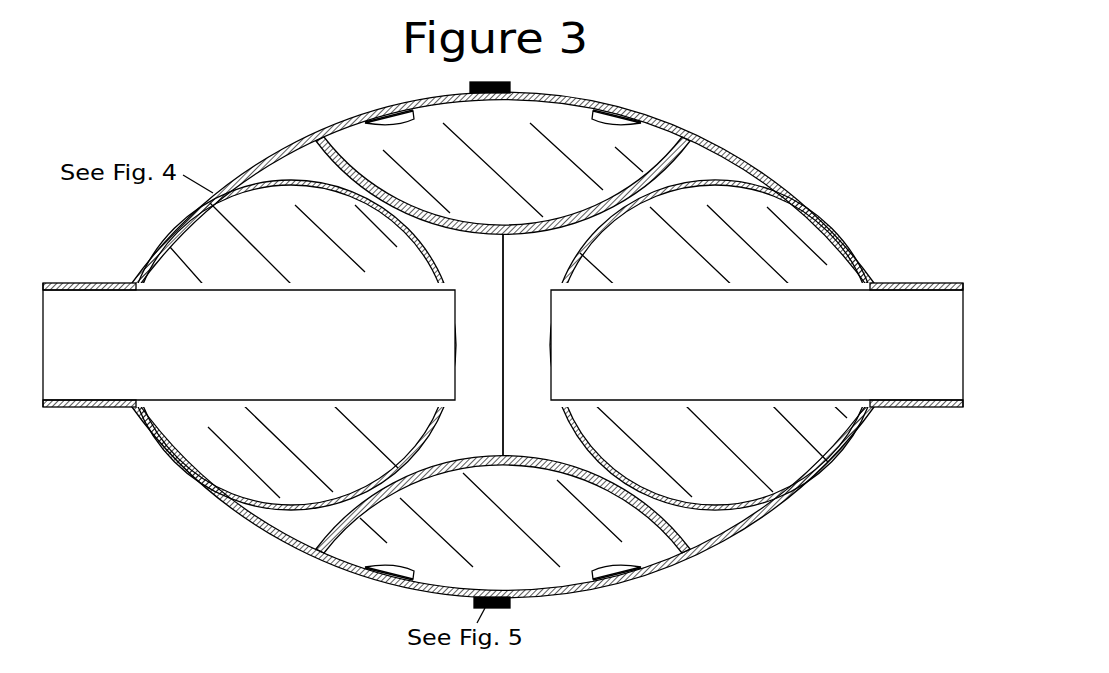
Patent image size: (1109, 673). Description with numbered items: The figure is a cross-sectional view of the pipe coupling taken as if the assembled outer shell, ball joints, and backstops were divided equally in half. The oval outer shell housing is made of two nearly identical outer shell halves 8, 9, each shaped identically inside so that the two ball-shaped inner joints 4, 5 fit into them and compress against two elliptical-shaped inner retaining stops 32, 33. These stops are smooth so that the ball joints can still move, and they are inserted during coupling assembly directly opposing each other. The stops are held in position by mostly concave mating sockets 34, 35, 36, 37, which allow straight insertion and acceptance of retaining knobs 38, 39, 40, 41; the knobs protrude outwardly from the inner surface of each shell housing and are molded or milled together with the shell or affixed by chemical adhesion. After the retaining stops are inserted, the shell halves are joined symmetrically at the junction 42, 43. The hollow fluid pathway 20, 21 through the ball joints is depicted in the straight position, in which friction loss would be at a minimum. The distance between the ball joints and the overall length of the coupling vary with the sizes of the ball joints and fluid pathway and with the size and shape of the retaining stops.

The ball-shaped inner joint 4 is at (291, 345).
The ball-shaped inner joint 5 is at (715, 345).
The outer shell half 8 is at (263, 533).
The outer shell half 9 is at (720, 146).
The hollow fluid pathway 20 is at (249, 345).
The hollow fluid pathway 21 is at (757, 345).
The inner retaining stop 32 is at (503, 178).
The inner retaining stop 33 is at (503, 511).
The mating socket 34 is at (408, 121).
The mating socket 35 is at (590, 117).
The mating socket 36 is at (430, 556).
The mating socket 37 is at (588, 571).
The retaining knob 38 is at (393, 106).
The retaining knob 39 is at (600, 106).
The retaining knob 40 is at (392, 583).
The retaining knob 41 is at (612, 583).
The symmetrical shell joint 42 is at (486, 345).
The symmetrical shell joint 43 is at (523, 345).